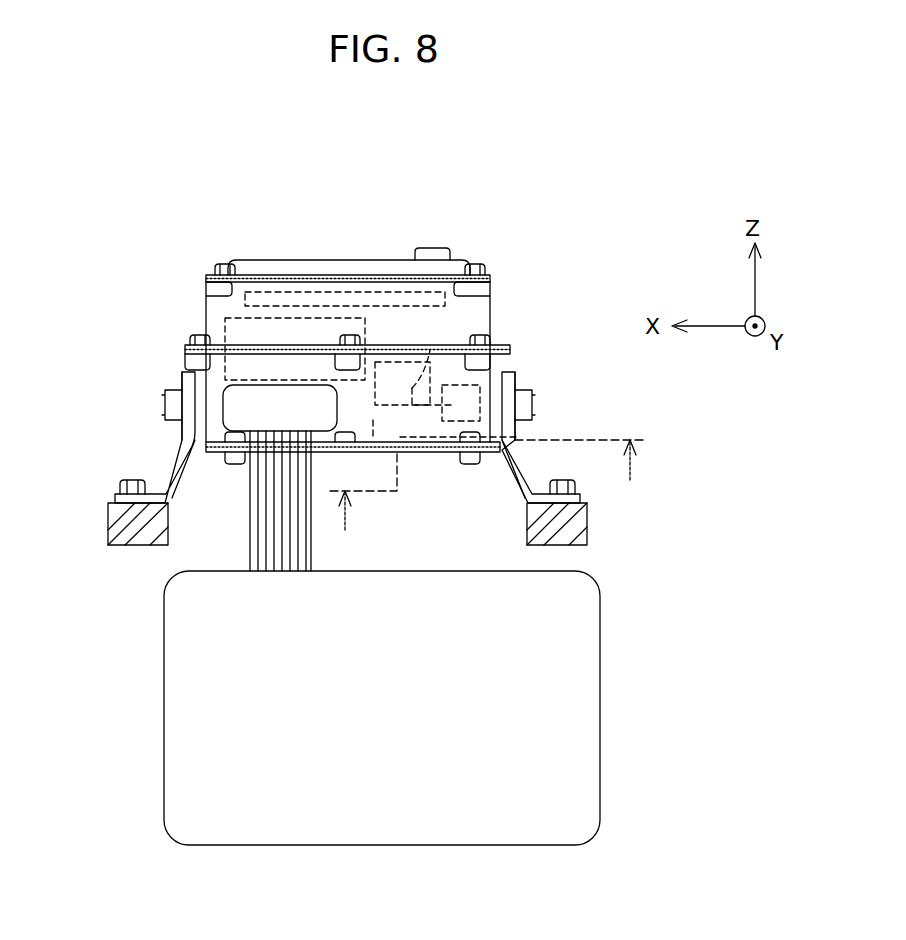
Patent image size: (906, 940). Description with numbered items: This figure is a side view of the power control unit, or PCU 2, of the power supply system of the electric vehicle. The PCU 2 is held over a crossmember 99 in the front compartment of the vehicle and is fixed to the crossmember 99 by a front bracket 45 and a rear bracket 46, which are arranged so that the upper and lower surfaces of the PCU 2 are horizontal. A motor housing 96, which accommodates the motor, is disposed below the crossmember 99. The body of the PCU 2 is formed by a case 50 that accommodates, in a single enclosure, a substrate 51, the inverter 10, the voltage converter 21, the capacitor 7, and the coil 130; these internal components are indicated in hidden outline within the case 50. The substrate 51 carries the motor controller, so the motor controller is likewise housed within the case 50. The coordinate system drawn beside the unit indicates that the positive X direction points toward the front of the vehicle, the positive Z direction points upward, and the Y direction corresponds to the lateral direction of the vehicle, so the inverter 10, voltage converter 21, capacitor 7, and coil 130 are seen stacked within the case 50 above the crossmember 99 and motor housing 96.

The power control unit 2 is at (170, 226).
The case 50 is at (218, 297).
The substrate 51 is at (278, 265).
The inverter 10 is at (215, 330).
The capacitor 7 is at (405, 345).
The voltage converter 21 is at (455, 355).
The coil 130 is at (470, 387).
The front bracket 45 is at (180, 455).
The rear bracket 46 is at (508, 385).
The crossmember 99 is at (118, 522).
The motor housing 96 is at (185, 698).